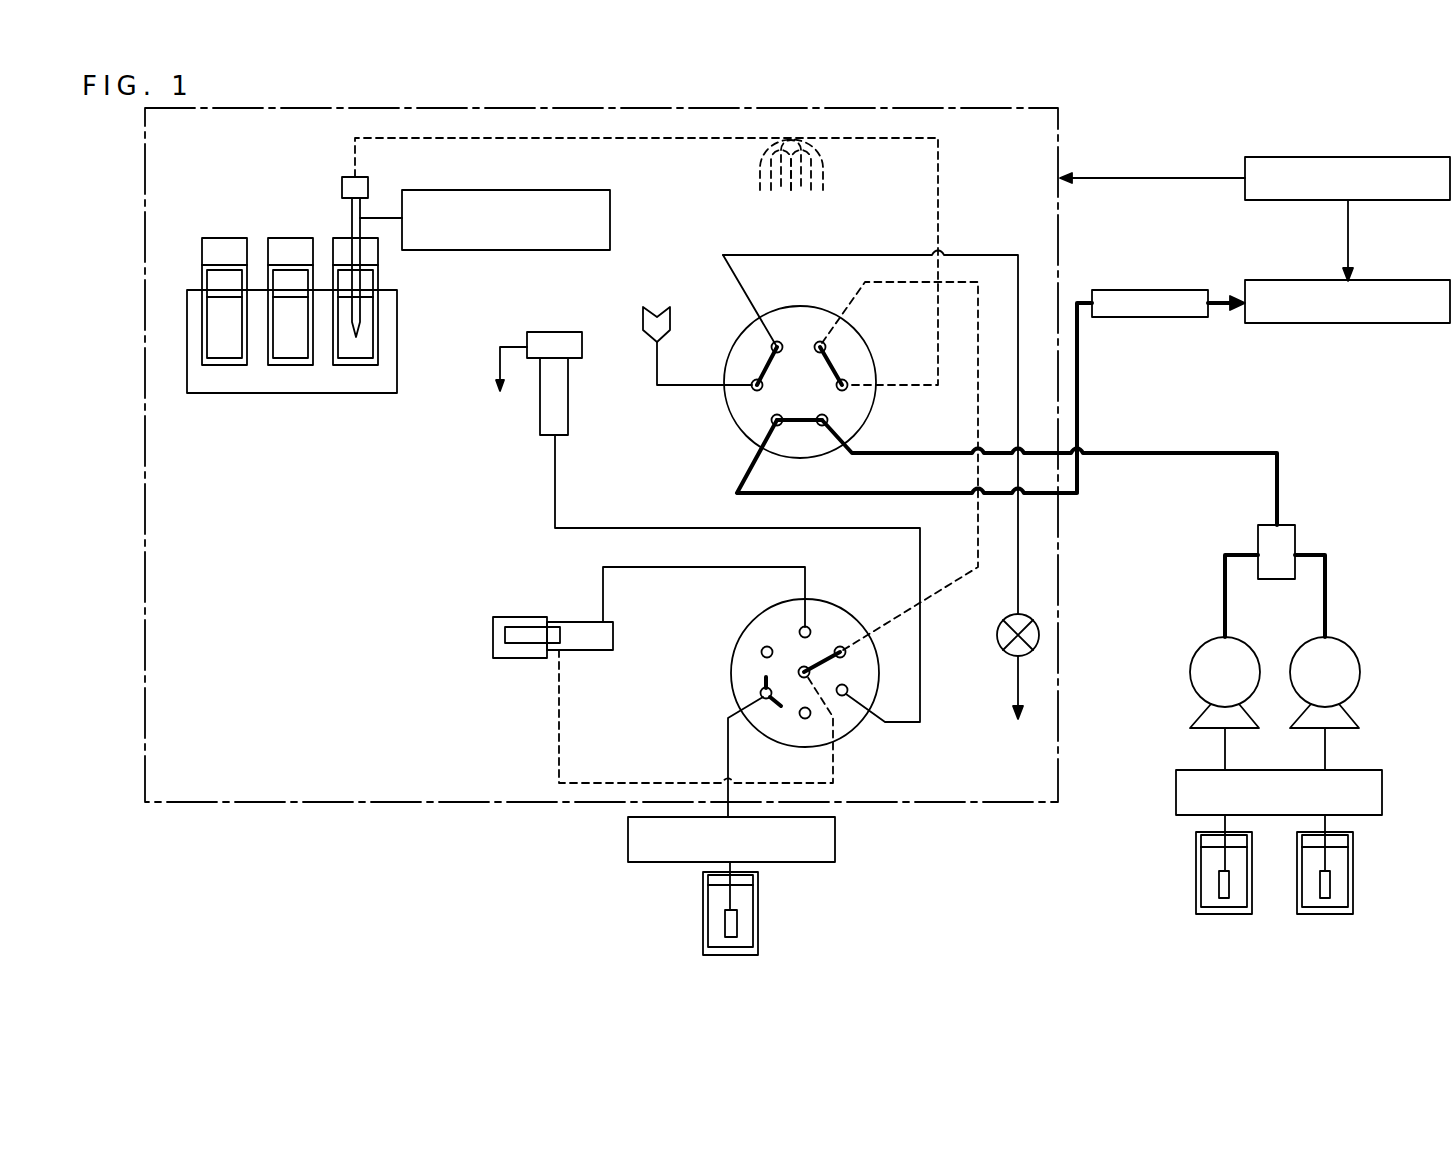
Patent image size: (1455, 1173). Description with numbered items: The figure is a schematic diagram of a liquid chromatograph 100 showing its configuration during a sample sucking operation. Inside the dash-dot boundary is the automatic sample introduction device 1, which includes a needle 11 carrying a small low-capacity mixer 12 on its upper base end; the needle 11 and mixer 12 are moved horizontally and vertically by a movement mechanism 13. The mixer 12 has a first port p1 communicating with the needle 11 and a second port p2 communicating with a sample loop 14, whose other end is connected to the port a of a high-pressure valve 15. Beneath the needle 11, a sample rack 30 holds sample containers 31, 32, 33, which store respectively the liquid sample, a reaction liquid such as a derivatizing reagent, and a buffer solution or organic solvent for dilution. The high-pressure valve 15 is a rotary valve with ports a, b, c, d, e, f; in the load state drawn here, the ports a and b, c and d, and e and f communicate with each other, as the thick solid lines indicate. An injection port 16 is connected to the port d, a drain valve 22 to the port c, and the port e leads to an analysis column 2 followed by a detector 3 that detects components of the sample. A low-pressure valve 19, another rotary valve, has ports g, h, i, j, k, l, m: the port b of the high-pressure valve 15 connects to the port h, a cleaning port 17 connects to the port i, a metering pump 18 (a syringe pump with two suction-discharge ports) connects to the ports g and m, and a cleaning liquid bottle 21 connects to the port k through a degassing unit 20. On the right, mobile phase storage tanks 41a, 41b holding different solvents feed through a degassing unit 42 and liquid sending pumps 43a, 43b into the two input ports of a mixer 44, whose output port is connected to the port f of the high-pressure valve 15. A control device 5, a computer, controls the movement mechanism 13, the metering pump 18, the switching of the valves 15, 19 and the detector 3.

The automatic sample introduction device 1 is at (145, 178).
The chromatograph 100 is at (1195, 152).
The analysis column 2 is at (1122, 290).
The detector 3 is at (1260, 280).
The control device 5 is at (1272, 157).
The needle 11 is at (352, 235).
The mixer 12 is at (342, 188).
The movement mechanism 13 is at (610, 200).
The sample loop 14 is at (822, 168).
The high-pressure valve 15 is at (746, 332).
The injection port 16 is at (643, 310).
The cleaning port 17 is at (568, 395).
The metering pump 18 is at (520, 617).
The low-pressure valve 19 is at (833, 603).
The degassing unit 20 is at (835, 832).
The cleaning liquid bottle 21 is at (725, 955).
The drain valve 22 is at (1003, 650).
The sample rack 30 is at (187, 300).
The sample container 31 is at (350, 367).
The sample container 32 is at (288, 367).
The sample container 33 is at (228, 367).
The mobile phase storage tank 41a is at (1220, 914).
The mobile phase storage tank 41b is at (1330, 914).
The degassing unit 42 is at (1382, 790).
The liquid sending pump 43a is at (1206, 644).
The liquid sending pump 43b is at (1342, 642).
The mixer 44 is at (1295, 535).
The first port p1 is at (368, 200).
The second port p2 is at (352, 175).
The port a is at (847, 389).
The port b is at (819, 341).
The port c is at (777, 341).
The port d is at (752, 389).
The port e is at (773, 423).
The port f is at (823, 427).
The port g is at (800, 628).
The port h is at (846, 652).
The port i is at (843, 696).
The port j is at (802, 718).
The port k is at (760, 693).
The port l is at (761, 652).
The port m is at (799, 668).